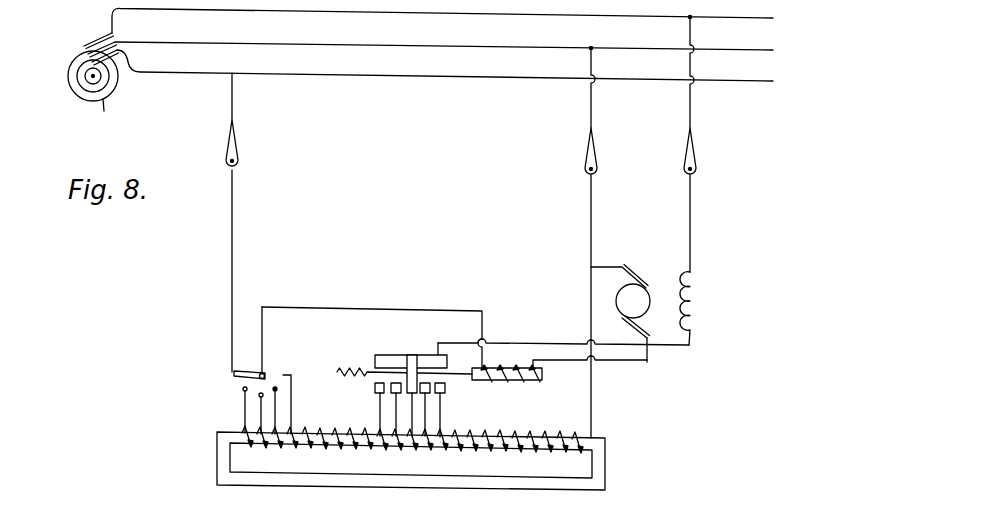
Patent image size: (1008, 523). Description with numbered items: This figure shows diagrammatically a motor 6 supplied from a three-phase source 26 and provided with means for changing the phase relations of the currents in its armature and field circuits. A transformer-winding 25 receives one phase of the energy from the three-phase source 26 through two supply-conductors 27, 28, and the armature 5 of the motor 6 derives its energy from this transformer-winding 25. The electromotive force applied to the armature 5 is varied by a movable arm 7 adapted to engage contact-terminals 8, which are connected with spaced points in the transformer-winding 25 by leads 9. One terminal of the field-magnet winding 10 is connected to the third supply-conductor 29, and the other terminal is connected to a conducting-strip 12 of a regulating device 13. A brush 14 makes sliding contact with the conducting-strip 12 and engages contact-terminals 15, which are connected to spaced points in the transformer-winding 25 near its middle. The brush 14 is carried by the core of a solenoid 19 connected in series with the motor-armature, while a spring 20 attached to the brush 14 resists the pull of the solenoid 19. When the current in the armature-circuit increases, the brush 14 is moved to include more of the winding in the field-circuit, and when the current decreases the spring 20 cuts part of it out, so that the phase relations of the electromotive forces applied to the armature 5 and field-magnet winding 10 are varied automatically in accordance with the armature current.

The third supply-conductor 29 is at (484, 13).
The supply-conductor 28 is at (484, 46).
The supply-conductor 27 is at (484, 78).
The three-phase source 26 is at (94, 99).
The armature 5 is at (618, 293).
The motor 6 is at (631, 301).
The field-magnet winding 10 is at (693, 286).
The movable arm 7 is at (250, 369).
The contact-terminals 8 is at (283, 375).
The leads 9 is at (293, 400).
The spring 20 is at (338, 372).
The regulating device 13 is at (366, 362).
The conducting-strip 12 is at (388, 355).
The brush 14 is at (413, 355).
The contact-terminals 15 is at (375, 388).
The solenoid 19 is at (528, 382).
The transformer-winding 25 is at (466, 440).